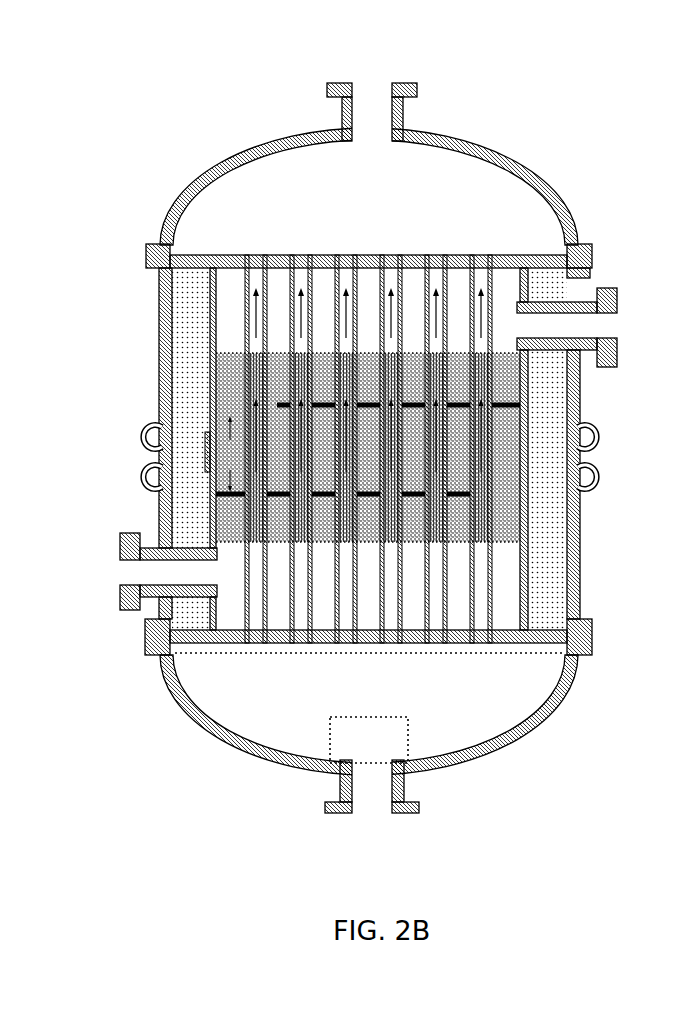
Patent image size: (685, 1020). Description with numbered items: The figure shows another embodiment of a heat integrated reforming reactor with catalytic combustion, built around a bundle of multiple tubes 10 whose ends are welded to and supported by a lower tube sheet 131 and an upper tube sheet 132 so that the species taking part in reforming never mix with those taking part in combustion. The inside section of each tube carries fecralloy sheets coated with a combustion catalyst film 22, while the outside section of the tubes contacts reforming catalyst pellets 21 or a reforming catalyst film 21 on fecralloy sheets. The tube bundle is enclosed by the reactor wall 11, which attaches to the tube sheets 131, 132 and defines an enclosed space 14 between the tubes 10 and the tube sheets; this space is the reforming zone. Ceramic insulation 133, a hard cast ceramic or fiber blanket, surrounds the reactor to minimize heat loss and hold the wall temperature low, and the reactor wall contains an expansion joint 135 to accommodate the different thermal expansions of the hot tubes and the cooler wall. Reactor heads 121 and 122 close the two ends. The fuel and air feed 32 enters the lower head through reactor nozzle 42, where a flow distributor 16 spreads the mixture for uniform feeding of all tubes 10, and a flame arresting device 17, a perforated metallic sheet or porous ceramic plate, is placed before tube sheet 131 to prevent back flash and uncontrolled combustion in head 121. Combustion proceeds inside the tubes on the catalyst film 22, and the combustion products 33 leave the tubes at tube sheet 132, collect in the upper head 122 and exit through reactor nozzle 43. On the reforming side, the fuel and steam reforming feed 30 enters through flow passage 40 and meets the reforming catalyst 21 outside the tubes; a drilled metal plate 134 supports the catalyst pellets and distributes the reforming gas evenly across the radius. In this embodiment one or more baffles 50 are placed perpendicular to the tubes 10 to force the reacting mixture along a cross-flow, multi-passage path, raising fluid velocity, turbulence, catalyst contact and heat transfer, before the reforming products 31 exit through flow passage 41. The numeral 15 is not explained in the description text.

The tubes 10 is at (493, 540).
The reactor wall 11 is at (580, 592).
The enclosed space 14 is at (228, 505).
The catalyst bed 15 is at (255, 397).
The flow distributor 16 is at (325, 740).
The flame arresting device 17 is at (193, 657).
The reforming catalyst pellets 21 is at (505, 455).
The combustion catalyst film 22 is at (480, 380).
The fuel and steam reforming feed 30 is at (157, 568).
The reforming products 31 is at (590, 327).
The fuel and air feed 32 is at (375, 800).
The combustion products 33 is at (368, 133).
The flow passage 40 is at (118, 580).
The flow passage 41 is at (618, 330).
The reactor nozzle 42 is at (382, 815).
The reactor nozzle 43 is at (360, 85).
The baffles 50 is at (280, 410).
The reactor head 121 is at (548, 715).
The reactor head 122 is at (553, 183).
The tube sheet 131 is at (508, 647).
The tube sheet 132 is at (515, 248).
The ceramic insulation 133 is at (190, 297).
The metal plate 134 is at (222, 352).
The expansion joint 135 is at (135, 424).